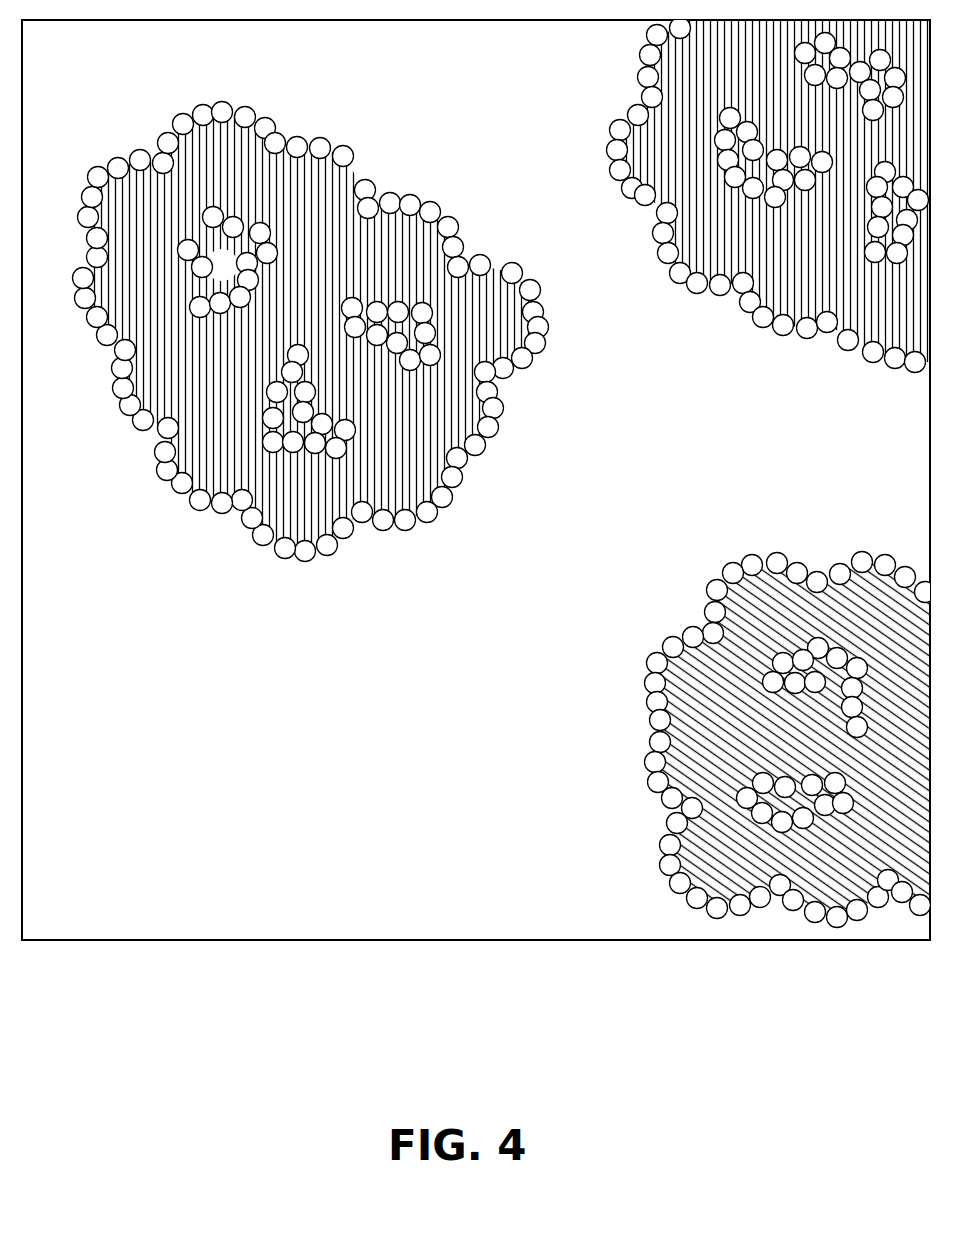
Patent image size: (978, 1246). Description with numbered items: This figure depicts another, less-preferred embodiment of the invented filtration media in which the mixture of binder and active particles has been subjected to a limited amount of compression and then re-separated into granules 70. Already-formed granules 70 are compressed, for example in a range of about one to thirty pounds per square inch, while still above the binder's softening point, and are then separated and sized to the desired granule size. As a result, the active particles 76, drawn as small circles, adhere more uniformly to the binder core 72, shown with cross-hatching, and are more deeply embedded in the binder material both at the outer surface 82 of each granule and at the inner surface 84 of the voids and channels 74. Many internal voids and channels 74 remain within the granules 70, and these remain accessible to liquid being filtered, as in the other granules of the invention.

The granules 70 is at (197, 540).
The binder core 72 is at (123, 280).
The voids and channels 74 is at (220, 258).
The active particles 76 is at (250, 217).
The outer surface 82 is at (500, 278).
The inner surface 84 is at (822, 800).